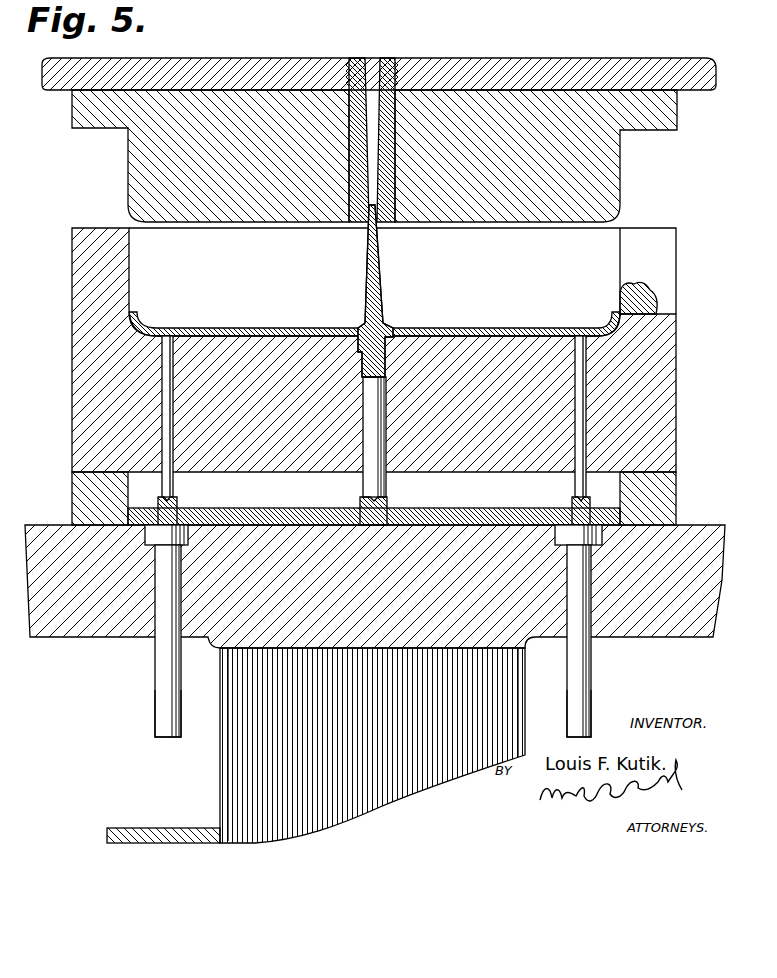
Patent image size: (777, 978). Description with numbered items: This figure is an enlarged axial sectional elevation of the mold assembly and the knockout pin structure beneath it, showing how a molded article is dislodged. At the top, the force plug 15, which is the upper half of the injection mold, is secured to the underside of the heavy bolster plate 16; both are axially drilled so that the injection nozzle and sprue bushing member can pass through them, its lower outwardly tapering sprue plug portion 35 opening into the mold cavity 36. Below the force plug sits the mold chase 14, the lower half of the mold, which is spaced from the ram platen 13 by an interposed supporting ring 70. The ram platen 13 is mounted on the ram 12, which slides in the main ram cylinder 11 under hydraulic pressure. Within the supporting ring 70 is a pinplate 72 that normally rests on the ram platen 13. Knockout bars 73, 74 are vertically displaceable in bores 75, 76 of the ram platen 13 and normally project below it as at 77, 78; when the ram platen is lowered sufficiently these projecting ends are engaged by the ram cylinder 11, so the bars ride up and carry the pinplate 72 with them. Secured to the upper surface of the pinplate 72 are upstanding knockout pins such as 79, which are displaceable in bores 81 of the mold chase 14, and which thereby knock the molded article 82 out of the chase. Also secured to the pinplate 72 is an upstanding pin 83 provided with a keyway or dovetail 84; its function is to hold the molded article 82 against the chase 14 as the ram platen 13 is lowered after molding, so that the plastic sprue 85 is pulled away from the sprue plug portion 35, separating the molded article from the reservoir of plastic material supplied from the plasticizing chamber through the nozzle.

The main ram cylinder 11 is at (125, 828).
The ram 12 is at (232, 760).
The ram platen 13 is at (51, 628).
The mold chase 14 is at (677, 356).
The force plug 15 is at (670, 108).
The bolster plate 16 is at (314, 57).
The sprue plug portion 35 is at (398, 100).
The mold cavity 36 is at (597, 267).
The supporting ring 70 is at (84, 487).
The pinplate 72 is at (298, 516).
The knockout bar 73 is at (160, 612).
The knockout bar 74 is at (585, 602).
The bore 75 is at (174, 638).
The bore 76 is at (572, 617).
The projecting lower end of knockout bar 77 is at (160, 708).
The projecting lower end of knockout bar 78 is at (592, 697).
The knockout pin 79 is at (178, 487).
The bore of mold chase 81 is at (167, 343).
The molded article 82 is at (232, 329).
The upstanding pin 83 is at (388, 490).
The keyway or dovetail 84 is at (396, 328).
The plastic sprue 85 is at (367, 247).